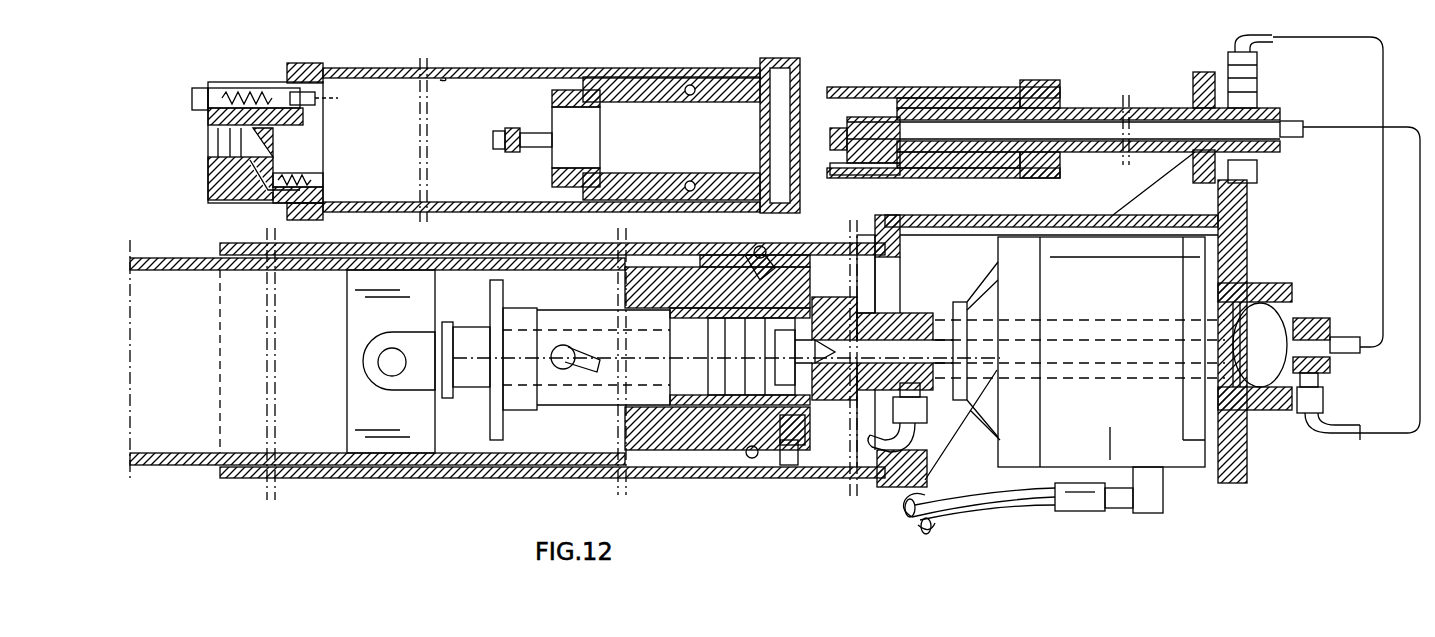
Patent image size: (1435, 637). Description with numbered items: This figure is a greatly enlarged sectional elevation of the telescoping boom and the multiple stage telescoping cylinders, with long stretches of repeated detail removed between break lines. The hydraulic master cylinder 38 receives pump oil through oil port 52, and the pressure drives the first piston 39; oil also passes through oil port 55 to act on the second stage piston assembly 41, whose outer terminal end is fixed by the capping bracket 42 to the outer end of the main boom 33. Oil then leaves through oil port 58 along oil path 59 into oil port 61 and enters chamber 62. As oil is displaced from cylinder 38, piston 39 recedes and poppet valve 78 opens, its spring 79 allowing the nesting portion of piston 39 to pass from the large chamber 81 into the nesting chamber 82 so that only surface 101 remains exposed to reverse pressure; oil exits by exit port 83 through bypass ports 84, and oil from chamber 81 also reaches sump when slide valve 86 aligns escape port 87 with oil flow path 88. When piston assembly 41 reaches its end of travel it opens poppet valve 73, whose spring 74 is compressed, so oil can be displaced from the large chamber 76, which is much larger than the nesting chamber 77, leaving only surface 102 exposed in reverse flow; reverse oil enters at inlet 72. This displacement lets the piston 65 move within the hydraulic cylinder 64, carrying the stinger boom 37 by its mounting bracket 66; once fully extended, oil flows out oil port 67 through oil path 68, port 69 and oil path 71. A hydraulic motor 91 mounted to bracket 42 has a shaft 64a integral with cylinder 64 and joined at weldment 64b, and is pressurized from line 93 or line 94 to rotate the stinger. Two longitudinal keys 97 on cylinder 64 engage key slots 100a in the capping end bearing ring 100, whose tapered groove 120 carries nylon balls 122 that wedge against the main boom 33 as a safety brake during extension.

The main boom 33 is at (478, 478).
The stinger boom 37 is at (185, 465).
The hydraulic master cylinder 38 is at (518, 68).
The piston 39 is at (927, 74).
The piston assembly 41 is at (1113, 108).
The capping bracket 42 is at (1295, 252).
The oil port 52 is at (695, 77).
The oil port 55 is at (968, 98).
The oil port 58 is at (1165, 108).
The oil path 59 is at (1383, 210).
The oil port 61 is at (1350, 337).
The chamber 62 is at (685, 380).
The hydraulic cylinder 64 is at (570, 299).
The shaft 64a is at (935, 313).
The weldment 64b is at (838, 310).
The piston 65 is at (735, 348).
The mounting bracket 66 is at (350, 405).
The oil port 67 is at (565, 370).
The oil path 68 is at (885, 470).
The port 69 is at (915, 403).
The oil path 71 is at (1420, 378).
The inlet 72 is at (1292, 121).
The poppet valve 73 is at (890, 178).
The spring 74 is at (868, 117).
The large chamber 76 is at (800, 80).
The nesting chamber 77 is at (600, 118).
The poppet valve 78 is at (600, 150).
The spring 79 is at (512, 152).
The large chamber 81 is at (445, 80).
The nesting chamber 82 is at (308, 165).
The exit port 83 is at (216, 134).
The bypass ports 84 is at (276, 130).
The slide valve 86 is at (318, 68).
The escape port 87 is at (338, 104).
The oil flow path 88 is at (282, 88).
The hydraulic motor 91 is at (1120, 309).
The line 93 is at (1040, 510).
The line 94 is at (960, 515).
The longitudinal keys 97 is at (625, 280).
The capping end bearing ring 100 is at (805, 425).
The key slots 100a is at (750, 262).
The surface 101 is at (508, 130).
The surface 102 is at (835, 152).
The tapered groove 120 is at (785, 465).
The nylon balls 122 is at (752, 460).